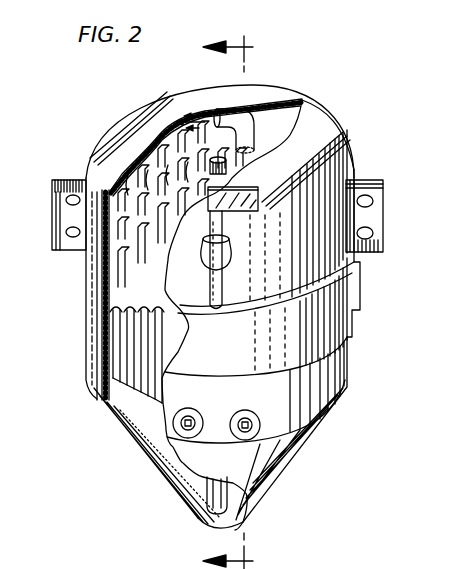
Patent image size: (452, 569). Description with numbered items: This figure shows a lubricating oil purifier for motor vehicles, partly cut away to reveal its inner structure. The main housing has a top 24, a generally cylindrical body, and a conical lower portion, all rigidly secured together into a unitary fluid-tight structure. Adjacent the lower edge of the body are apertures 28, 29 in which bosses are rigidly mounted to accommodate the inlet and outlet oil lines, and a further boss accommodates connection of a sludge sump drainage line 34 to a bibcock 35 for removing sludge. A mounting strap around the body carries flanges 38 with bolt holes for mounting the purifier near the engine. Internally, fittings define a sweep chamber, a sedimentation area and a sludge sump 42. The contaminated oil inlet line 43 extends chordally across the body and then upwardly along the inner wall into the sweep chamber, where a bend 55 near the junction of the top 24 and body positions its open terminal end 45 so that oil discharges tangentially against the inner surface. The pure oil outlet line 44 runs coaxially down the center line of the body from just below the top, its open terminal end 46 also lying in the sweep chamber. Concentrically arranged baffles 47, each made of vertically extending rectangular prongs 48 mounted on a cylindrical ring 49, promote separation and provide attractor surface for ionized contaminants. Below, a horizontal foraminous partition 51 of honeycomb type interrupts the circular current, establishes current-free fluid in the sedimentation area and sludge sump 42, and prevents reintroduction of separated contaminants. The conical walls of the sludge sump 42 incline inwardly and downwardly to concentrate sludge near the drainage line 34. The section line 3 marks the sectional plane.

The section line 3- 3 is at (218, 302).
The top 24 is at (108, 136).
The aperture 28 is at (258, 400).
The aperture 29 is at (193, 423).
The sludge sump drainage line 34 is at (210, 498).
The bibcock 35 is at (233, 258).
The flanges 38 is at (364, 180).
The sludge sump 42 is at (180, 468).
The contaminated oil inlet line 43 is at (256, 126).
The pure oil outlet line 44 is at (233, 173).
The open terminal end 45 is at (205, 104).
The open terminal end 46 is at (228, 158).
The baffle 47 is at (163, 146).
The prongs 48 is at (147, 268).
The ring 49 is at (157, 307).
The foraminous partition 51 is at (127, 358).
The bend 55 is at (285, 101).